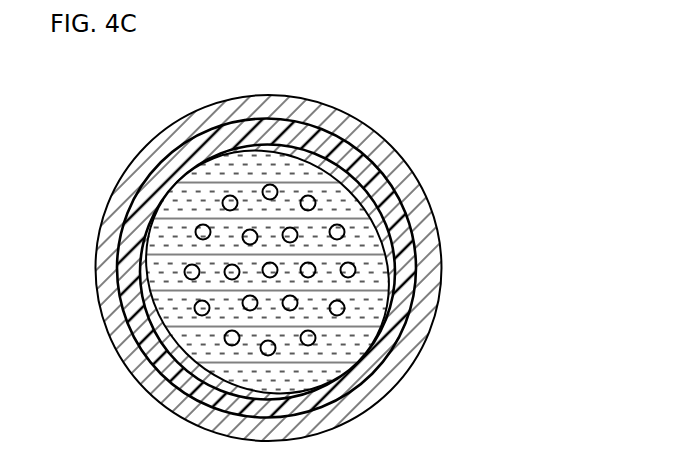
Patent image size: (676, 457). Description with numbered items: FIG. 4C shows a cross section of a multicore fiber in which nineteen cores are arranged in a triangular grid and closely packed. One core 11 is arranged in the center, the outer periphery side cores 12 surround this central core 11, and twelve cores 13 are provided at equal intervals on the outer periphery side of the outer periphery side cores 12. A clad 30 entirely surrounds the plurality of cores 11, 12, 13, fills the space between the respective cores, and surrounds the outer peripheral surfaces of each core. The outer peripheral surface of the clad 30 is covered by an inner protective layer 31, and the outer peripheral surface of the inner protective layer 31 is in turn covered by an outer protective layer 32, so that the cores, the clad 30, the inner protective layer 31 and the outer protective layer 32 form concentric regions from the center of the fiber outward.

The core 11 is at (265, 265).
The core 12 is at (213, 153).
The core 13 is at (252, 230).
The clad 30 is at (330, 177).
The inner protective layer 31 is at (400, 170).
The outer protective layer 32 is at (418, 220).